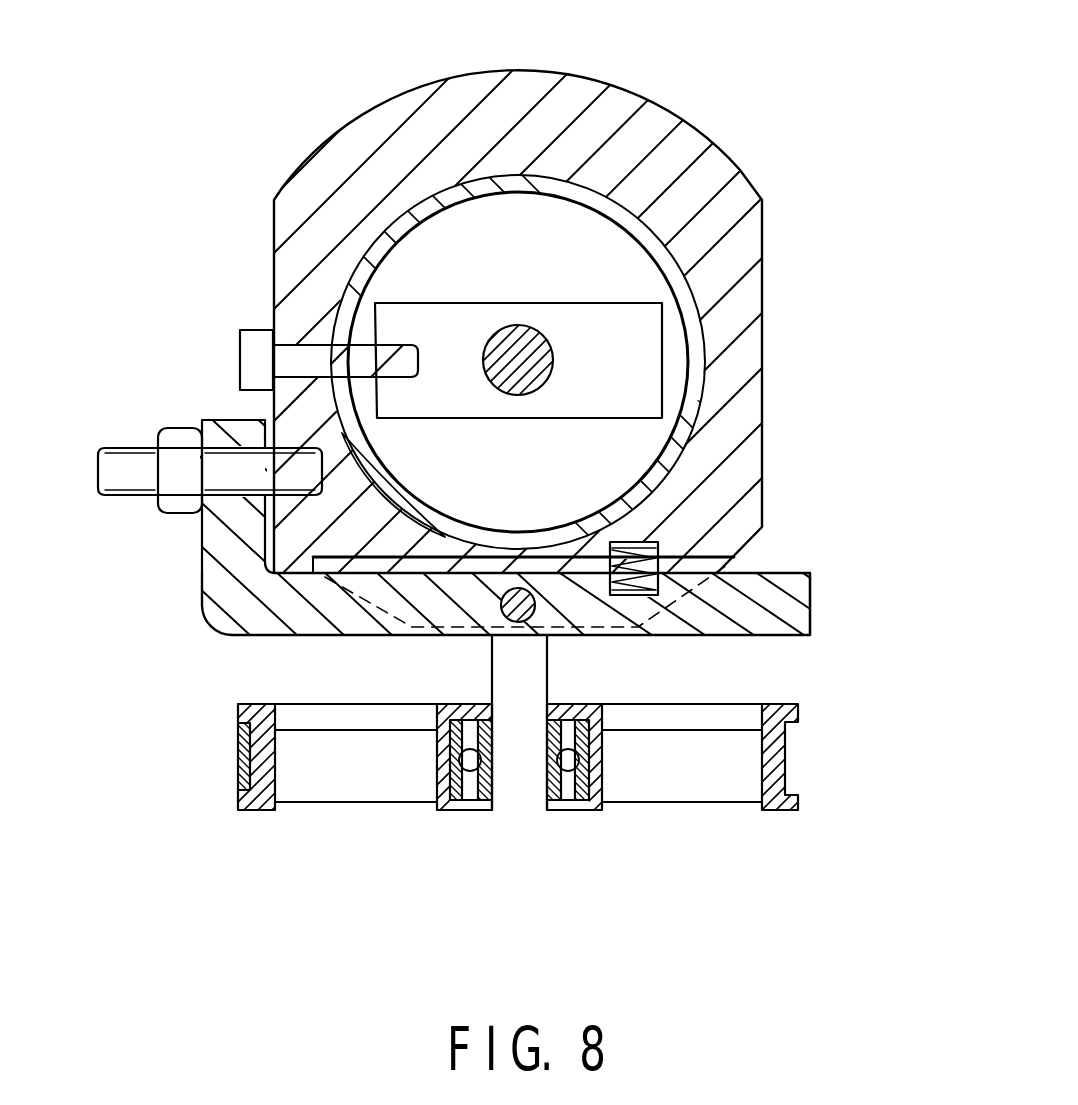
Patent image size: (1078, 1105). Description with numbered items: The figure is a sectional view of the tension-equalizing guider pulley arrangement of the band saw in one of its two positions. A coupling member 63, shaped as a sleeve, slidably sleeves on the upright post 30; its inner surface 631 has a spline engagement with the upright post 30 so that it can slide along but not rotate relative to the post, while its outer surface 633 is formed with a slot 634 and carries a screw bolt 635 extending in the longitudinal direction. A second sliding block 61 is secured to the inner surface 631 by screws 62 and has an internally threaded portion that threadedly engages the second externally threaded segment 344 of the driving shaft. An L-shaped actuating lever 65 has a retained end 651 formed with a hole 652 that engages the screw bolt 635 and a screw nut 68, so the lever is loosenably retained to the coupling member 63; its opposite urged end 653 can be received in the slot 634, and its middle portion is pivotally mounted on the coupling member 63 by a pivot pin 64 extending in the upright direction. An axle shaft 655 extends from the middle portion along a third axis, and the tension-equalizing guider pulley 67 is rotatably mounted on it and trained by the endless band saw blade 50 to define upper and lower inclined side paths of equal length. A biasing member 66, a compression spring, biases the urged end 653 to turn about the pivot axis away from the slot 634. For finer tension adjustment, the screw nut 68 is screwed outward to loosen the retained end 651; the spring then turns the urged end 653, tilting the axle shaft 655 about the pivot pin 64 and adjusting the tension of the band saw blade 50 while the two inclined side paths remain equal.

The upright post 30 is at (650, 235).
The second sliding block 61 is at (653, 348).
The screws 62 is at (257, 337).
The coupling member 63 is at (762, 440).
The pivot pin 64 is at (545, 612).
The L-shaped actuating lever 65 is at (200, 598).
The biasing member 66 is at (643, 538).
The tension-equalizing guider pulley 67 is at (262, 803).
The screw nut 68 is at (182, 437).
The endless band saw blade 50 is at (238, 753).
The second externally threaded segment 344 is at (548, 372).
The inner surface 631 is at (683, 468).
The outer surface 633 is at (717, 570).
The slot 634 is at (797, 640).
The screw bolt 635 is at (127, 455).
The retained end 651 is at (208, 570).
The hole 652 is at (232, 537).
The urged end 653 is at (733, 630).
The axle shaft 655 is at (492, 672).